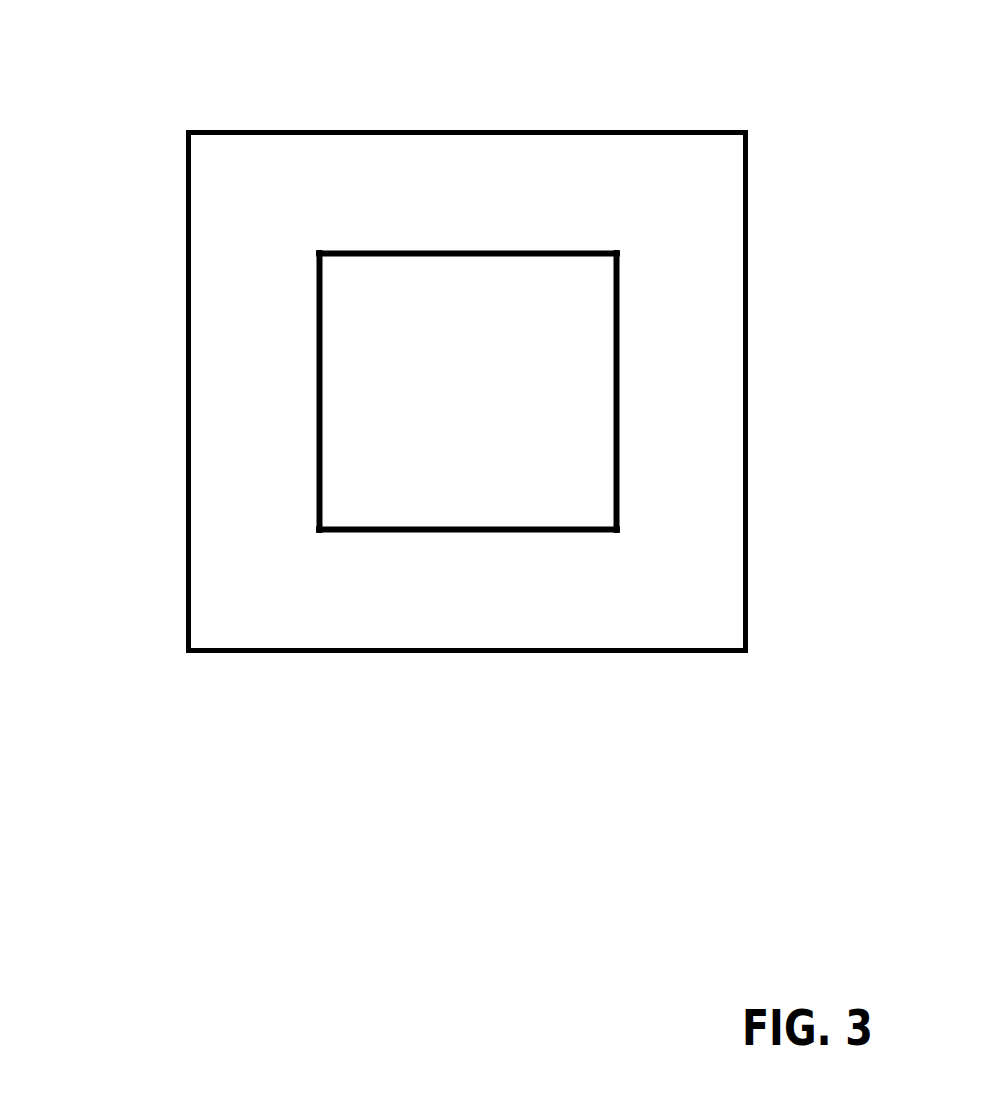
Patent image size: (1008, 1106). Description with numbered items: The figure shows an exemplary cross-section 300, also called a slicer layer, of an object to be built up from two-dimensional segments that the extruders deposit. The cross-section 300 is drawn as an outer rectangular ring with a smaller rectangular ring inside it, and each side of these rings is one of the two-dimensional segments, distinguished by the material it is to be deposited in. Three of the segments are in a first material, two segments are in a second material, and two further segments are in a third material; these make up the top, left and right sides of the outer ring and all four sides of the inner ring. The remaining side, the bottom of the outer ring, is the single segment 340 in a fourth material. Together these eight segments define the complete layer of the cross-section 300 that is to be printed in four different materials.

The cross-section 300 is at (639, 31).
The segment in fourth material 340 is at (491, 654).